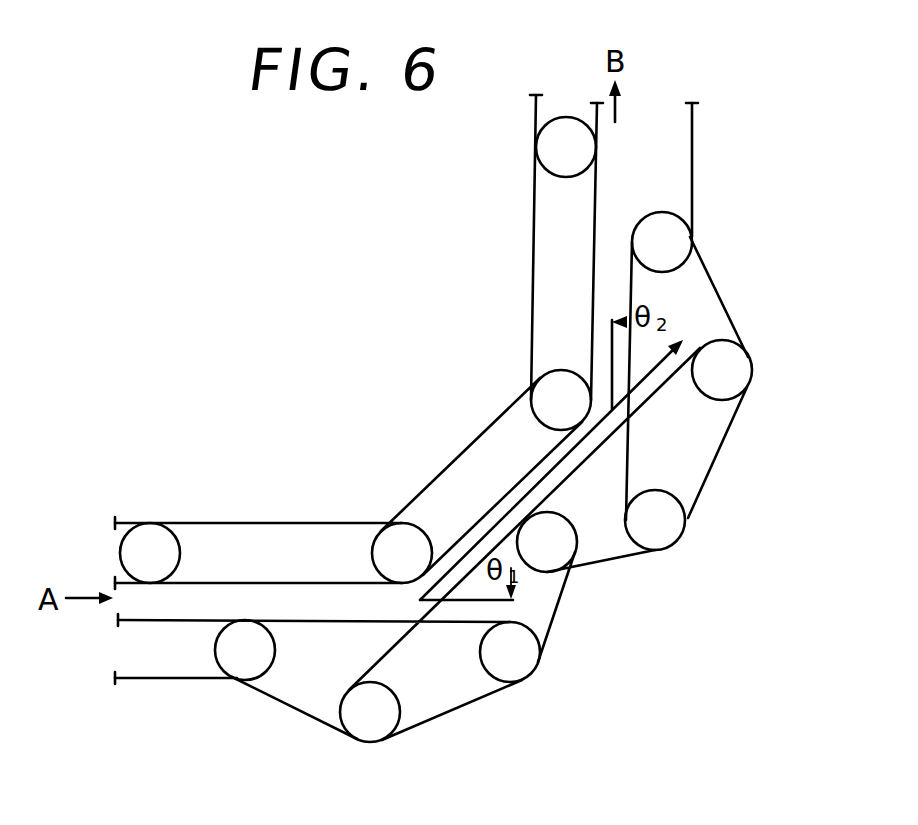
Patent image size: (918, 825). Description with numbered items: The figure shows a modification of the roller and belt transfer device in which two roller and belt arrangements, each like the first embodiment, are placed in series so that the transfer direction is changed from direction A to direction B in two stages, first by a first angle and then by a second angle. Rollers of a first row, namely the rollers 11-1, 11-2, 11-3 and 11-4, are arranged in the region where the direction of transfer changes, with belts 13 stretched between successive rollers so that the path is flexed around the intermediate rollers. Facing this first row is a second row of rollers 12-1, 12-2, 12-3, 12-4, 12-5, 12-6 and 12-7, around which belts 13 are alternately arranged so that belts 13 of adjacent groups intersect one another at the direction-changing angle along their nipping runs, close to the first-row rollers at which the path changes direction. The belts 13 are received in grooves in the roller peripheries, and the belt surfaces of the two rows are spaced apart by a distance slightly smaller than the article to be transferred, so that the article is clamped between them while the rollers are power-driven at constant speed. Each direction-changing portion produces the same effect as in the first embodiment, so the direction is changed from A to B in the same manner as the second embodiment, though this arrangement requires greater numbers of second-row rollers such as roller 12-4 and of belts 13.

The roller of first row 11-1 is at (152, 545).
The roller of first row 11-2 is at (398, 565).
The roller of first row 11-3 is at (552, 397).
The roller of first row 11-4 is at (557, 150).
The roller of second row 12-1 is at (245, 665).
The roller of second row 12-2 is at (385, 720).
The roller of second row 12-3 is at (527, 660).
The roller of second row 12-4 is at (550, 550).
The roller of second row 12-5 is at (665, 517).
The roller of second row 12-6 is at (730, 380).
The roller of second row 12-7 is at (662, 245).
The belt 13 is at (530, 283).